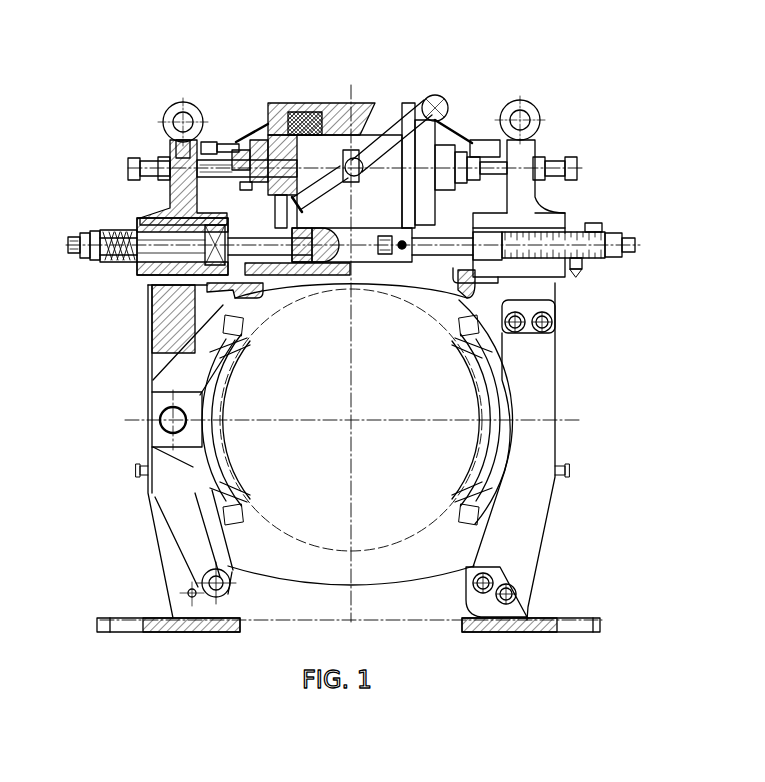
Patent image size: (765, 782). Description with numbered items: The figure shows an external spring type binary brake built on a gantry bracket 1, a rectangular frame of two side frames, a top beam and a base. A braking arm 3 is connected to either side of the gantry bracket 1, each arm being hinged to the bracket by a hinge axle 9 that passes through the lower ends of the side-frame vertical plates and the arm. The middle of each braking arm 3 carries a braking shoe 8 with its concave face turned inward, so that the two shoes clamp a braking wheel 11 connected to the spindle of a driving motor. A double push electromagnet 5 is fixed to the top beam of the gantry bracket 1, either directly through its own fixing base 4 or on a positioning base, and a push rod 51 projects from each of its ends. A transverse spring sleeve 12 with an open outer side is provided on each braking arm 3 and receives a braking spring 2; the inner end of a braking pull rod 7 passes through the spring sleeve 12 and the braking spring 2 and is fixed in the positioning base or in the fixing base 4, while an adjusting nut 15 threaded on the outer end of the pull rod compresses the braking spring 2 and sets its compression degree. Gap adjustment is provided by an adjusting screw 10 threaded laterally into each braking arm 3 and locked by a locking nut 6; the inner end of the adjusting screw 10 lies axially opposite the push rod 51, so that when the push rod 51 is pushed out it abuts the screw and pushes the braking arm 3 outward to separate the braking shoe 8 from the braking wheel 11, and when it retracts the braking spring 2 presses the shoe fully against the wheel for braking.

The gantry bracket 1 is at (530, 448).
The braking spring 2 is at (120, 265).
The braking arm 3 is at (150, 345).
The fixing base 4 is at (343, 222).
The double push electromagnet 5 is at (390, 118).
The locking nut 6 is at (145, 165).
The braking pull rod 7 is at (86, 228).
The braking shoe 8 is at (195, 458).
The hinge axle 9 is at (192, 593).
The adjusting screw 10 is at (184, 168).
The braking wheel 11 is at (425, 388).
The spring sleeve 12 is at (145, 212).
The adjusting nut 15 is at (80, 262).
The push rod 51 is at (236, 150).